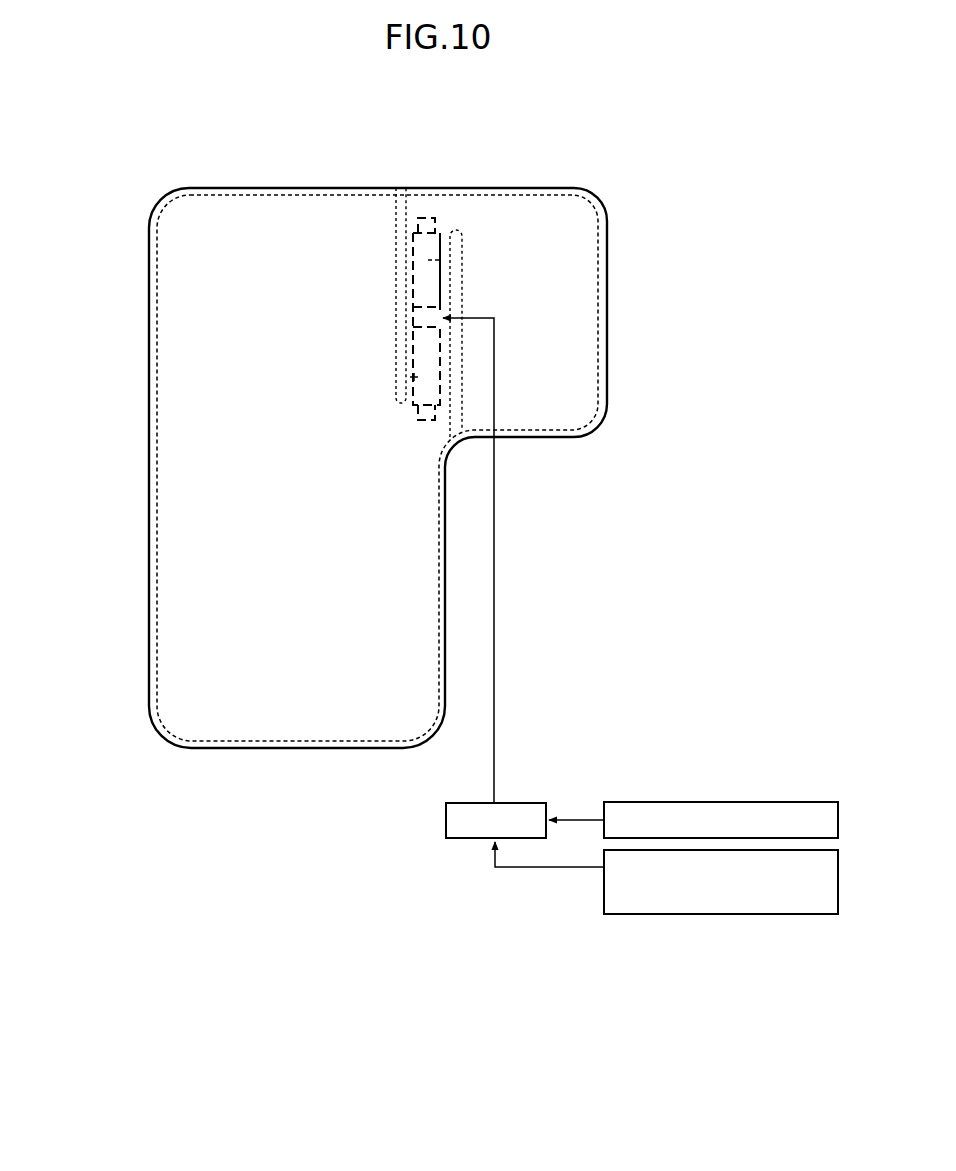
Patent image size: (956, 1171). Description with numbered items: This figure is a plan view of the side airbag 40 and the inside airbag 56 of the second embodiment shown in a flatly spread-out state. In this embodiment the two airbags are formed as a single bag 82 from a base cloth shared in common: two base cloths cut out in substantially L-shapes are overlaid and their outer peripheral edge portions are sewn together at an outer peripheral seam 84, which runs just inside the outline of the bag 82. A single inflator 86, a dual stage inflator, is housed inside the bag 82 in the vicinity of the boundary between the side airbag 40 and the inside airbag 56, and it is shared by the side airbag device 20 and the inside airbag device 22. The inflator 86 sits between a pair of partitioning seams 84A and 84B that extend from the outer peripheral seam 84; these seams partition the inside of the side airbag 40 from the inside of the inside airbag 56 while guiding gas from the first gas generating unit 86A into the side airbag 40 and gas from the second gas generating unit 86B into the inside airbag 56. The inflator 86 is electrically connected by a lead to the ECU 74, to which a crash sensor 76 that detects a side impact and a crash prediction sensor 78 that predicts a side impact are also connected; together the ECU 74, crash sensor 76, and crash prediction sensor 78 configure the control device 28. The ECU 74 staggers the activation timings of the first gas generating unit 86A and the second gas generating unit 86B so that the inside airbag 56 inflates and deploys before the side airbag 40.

The side airbag device 20 is at (114, 238).
The inside airbag device 22 is at (628, 247).
The control device 28 is at (560, 904).
The side airbag 40 is at (202, 453).
The inside airbag 56 is at (558, 310).
The ECU 74 is at (460, 838).
The crash sensor 76 is at (682, 802).
The crash prediction sensor 78 is at (683, 914).
The bag 82 is at (297, 751).
The outer peripheral seam 84 is at (157, 566).
The partitioning seam 84A is at (396, 316).
The partitioning seam 84B is at (462, 292).
The inflator 86 is at (413, 282).
The first gas generating unit 86A is at (412, 377).
The second gas generating unit 86B is at (442, 259).